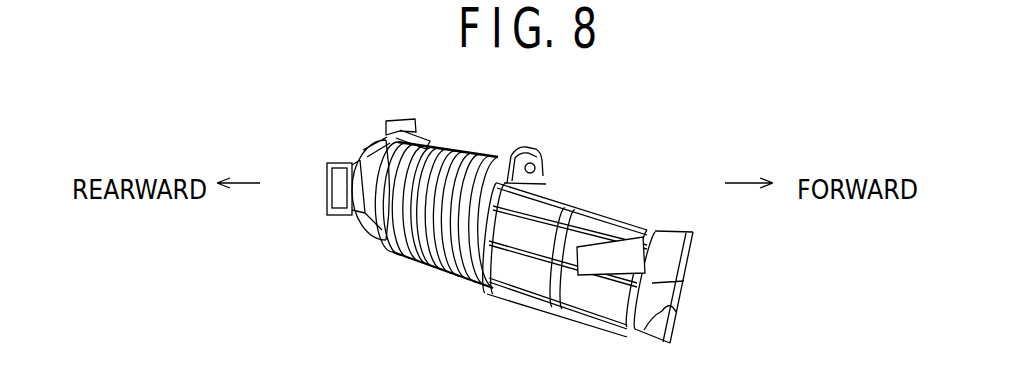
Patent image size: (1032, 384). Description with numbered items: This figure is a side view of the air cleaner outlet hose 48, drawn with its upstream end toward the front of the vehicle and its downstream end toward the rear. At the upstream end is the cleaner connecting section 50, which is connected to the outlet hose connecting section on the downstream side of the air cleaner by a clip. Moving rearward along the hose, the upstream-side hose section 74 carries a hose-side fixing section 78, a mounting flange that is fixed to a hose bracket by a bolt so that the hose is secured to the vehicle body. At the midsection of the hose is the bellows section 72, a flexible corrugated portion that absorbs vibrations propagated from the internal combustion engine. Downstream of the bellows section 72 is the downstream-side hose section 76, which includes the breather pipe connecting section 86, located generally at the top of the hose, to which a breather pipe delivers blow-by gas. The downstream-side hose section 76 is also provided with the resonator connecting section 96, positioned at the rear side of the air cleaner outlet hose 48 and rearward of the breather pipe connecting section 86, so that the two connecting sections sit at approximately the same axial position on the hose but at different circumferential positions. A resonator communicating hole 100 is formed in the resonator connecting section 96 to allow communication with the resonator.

The air cleaner outlet hose 48 is at (584, 126).
The cleaner connecting section 50 is at (670, 243).
The bellows section 72 is at (412, 255).
The upstream-side hose section 74 is at (523, 271).
The downstream-side hose section 76 is at (366, 217).
The hose-side fixing section 78 is at (603, 255).
The breather pipe connecting section 86 is at (417, 127).
The resonator connecting section 96 is at (339, 162).
The resonator communicating hole 100 is at (328, 184).